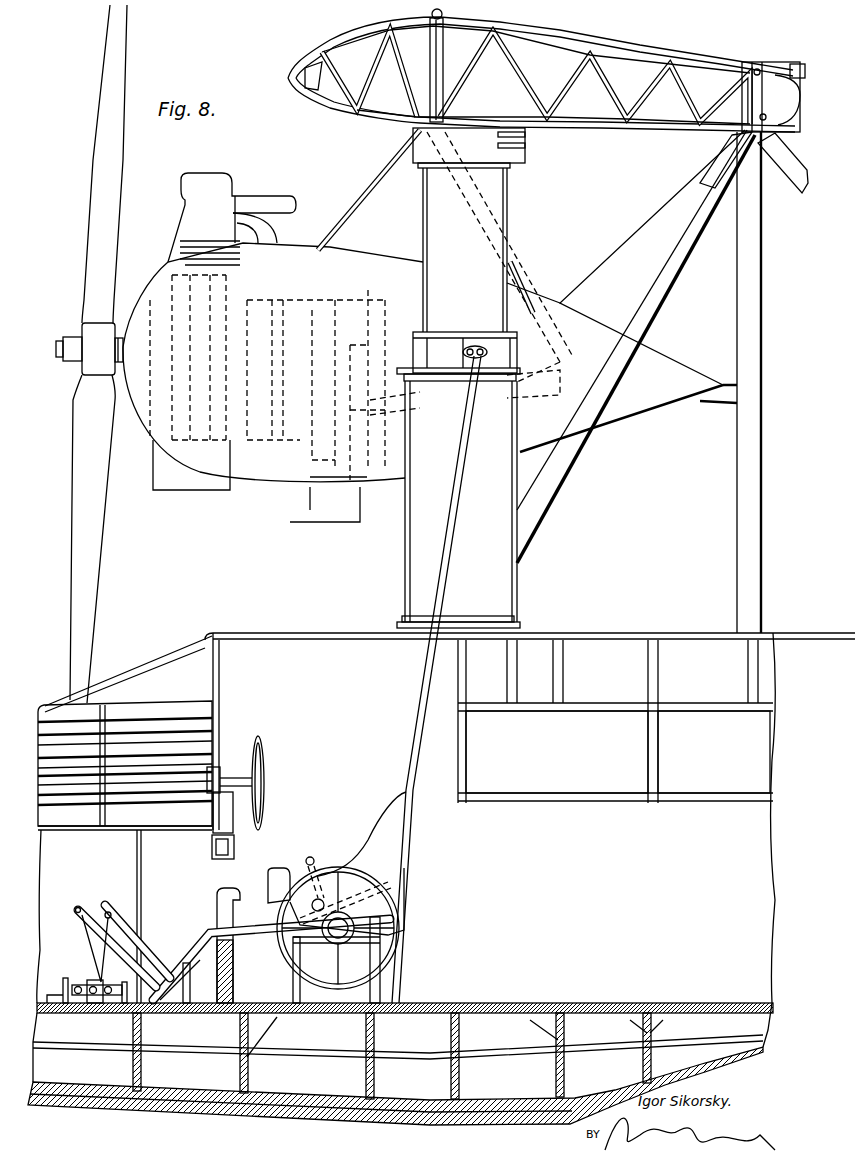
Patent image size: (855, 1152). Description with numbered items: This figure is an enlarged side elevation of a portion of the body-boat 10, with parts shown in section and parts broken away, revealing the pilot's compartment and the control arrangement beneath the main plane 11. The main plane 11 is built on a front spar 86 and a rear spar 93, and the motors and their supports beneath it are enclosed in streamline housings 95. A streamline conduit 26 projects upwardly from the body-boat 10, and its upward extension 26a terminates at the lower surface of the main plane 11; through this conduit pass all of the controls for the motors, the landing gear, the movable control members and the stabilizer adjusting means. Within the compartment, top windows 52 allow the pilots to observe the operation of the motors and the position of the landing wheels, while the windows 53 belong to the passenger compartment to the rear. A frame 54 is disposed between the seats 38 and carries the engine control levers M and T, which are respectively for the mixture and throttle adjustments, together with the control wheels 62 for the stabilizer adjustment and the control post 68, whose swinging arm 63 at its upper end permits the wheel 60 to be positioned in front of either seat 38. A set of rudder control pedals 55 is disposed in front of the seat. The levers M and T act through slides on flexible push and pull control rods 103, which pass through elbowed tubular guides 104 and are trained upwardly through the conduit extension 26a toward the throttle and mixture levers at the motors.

The body-boat 10 is at (177, 1077).
The main plane 11 is at (350, 40).
The streamline conduit 26 is at (517, 600).
The upward extension of the conduit 26a is at (507, 225).
The seats 38 is at (370, 857).
The top windows 52 is at (283, 632).
The windows of passenger compartment 53 is at (615, 721).
The frame 54 is at (247, 923).
The rudder control pedals 55 is at (107, 954).
The wheel 60 is at (265, 767).
The control wheels for stabilizer adjustment 62 is at (397, 924).
The swinging arm 63 is at (205, 836).
The control post 68 is at (217, 872).
The front spar 86 is at (428, 55).
The rear spar 93 is at (752, 70).
The streamline housings 95 is at (560, 303).
The flexible push and pull control rods 103 is at (408, 842).
The elbowed tubular guides 104 is at (407, 870).
The mixture control lever M is at (312, 897).
The throttle control lever T is at (311, 857).